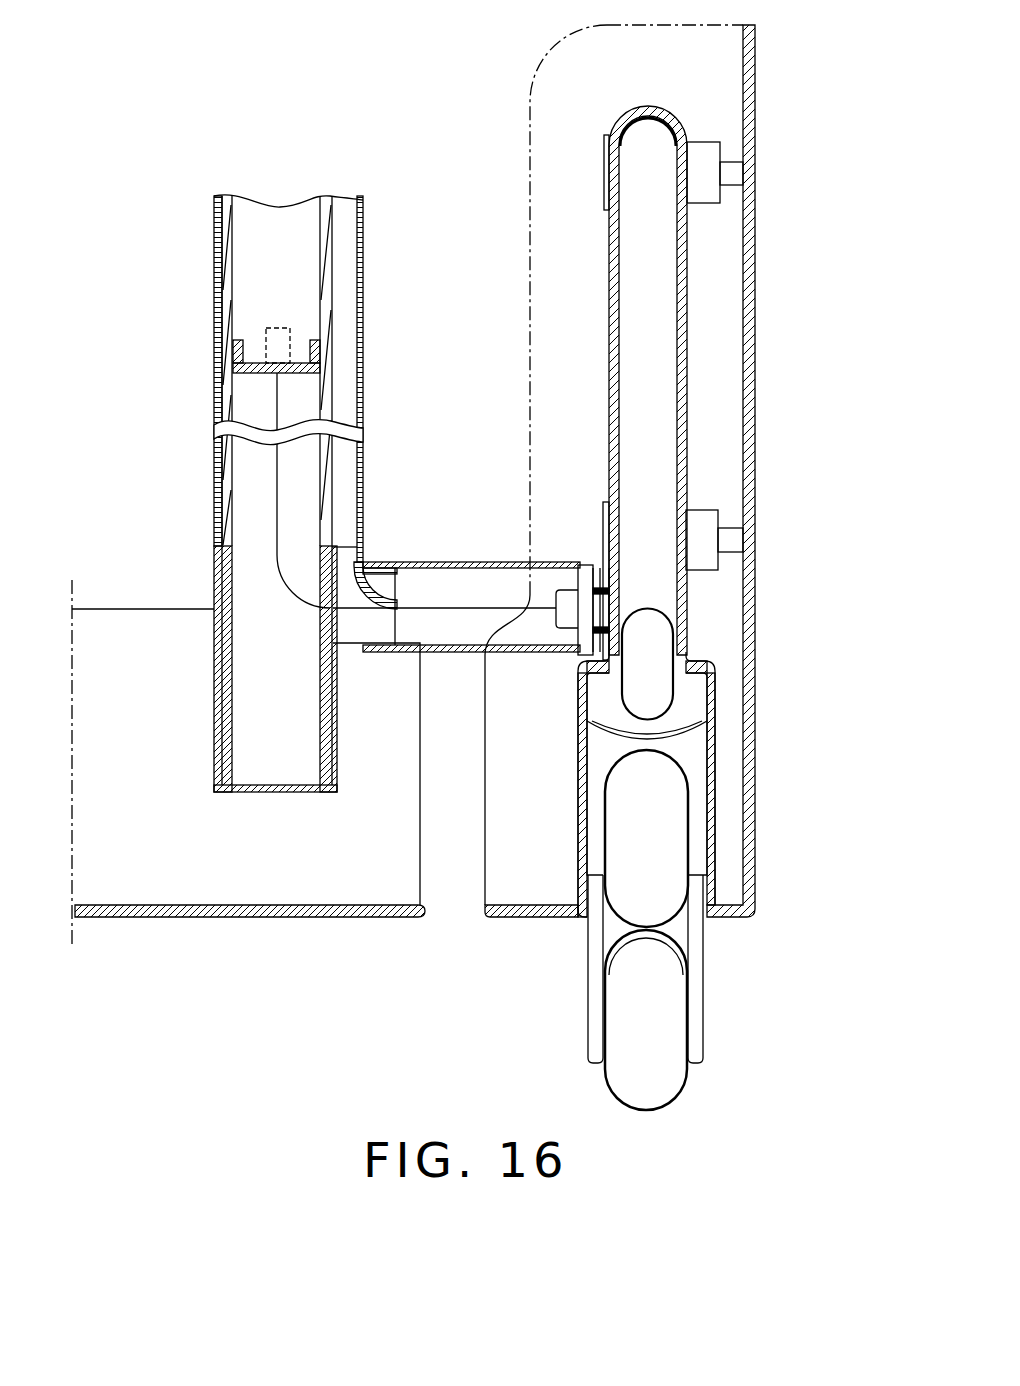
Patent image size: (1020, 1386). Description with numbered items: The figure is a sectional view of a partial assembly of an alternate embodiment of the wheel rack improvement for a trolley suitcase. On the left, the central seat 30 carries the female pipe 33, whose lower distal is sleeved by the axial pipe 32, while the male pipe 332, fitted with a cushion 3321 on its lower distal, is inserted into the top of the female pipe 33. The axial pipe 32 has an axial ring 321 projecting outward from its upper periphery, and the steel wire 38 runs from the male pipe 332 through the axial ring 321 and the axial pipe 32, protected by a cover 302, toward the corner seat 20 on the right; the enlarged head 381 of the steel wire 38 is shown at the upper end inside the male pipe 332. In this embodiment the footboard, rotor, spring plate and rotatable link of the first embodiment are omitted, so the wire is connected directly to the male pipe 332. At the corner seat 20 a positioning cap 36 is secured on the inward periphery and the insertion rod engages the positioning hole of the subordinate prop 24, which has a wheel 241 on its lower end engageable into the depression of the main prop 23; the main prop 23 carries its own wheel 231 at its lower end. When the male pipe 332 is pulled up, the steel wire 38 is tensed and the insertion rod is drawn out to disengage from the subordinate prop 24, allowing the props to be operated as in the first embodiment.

The corner seat 20 is at (755, 645).
The main prop 23 is at (694, 940).
The lower roller 231 is at (665, 1015).
The subordinate prop 24 is at (690, 758).
The wheel 241 is at (660, 820).
The central seat 30 is at (127, 913).
The cover 302 is at (487, 560).
The axial pipe 32 is at (362, 470).
The axial ring 321 is at (380, 565).
The female pipe 33 is at (328, 262).
The male pipe 332 is at (260, 262).
The cushion 3321 is at (235, 369).
The positioning cap 36 is at (585, 580).
The steel wire 38 is at (436, 606).
The enlarged head 381 is at (265, 333).